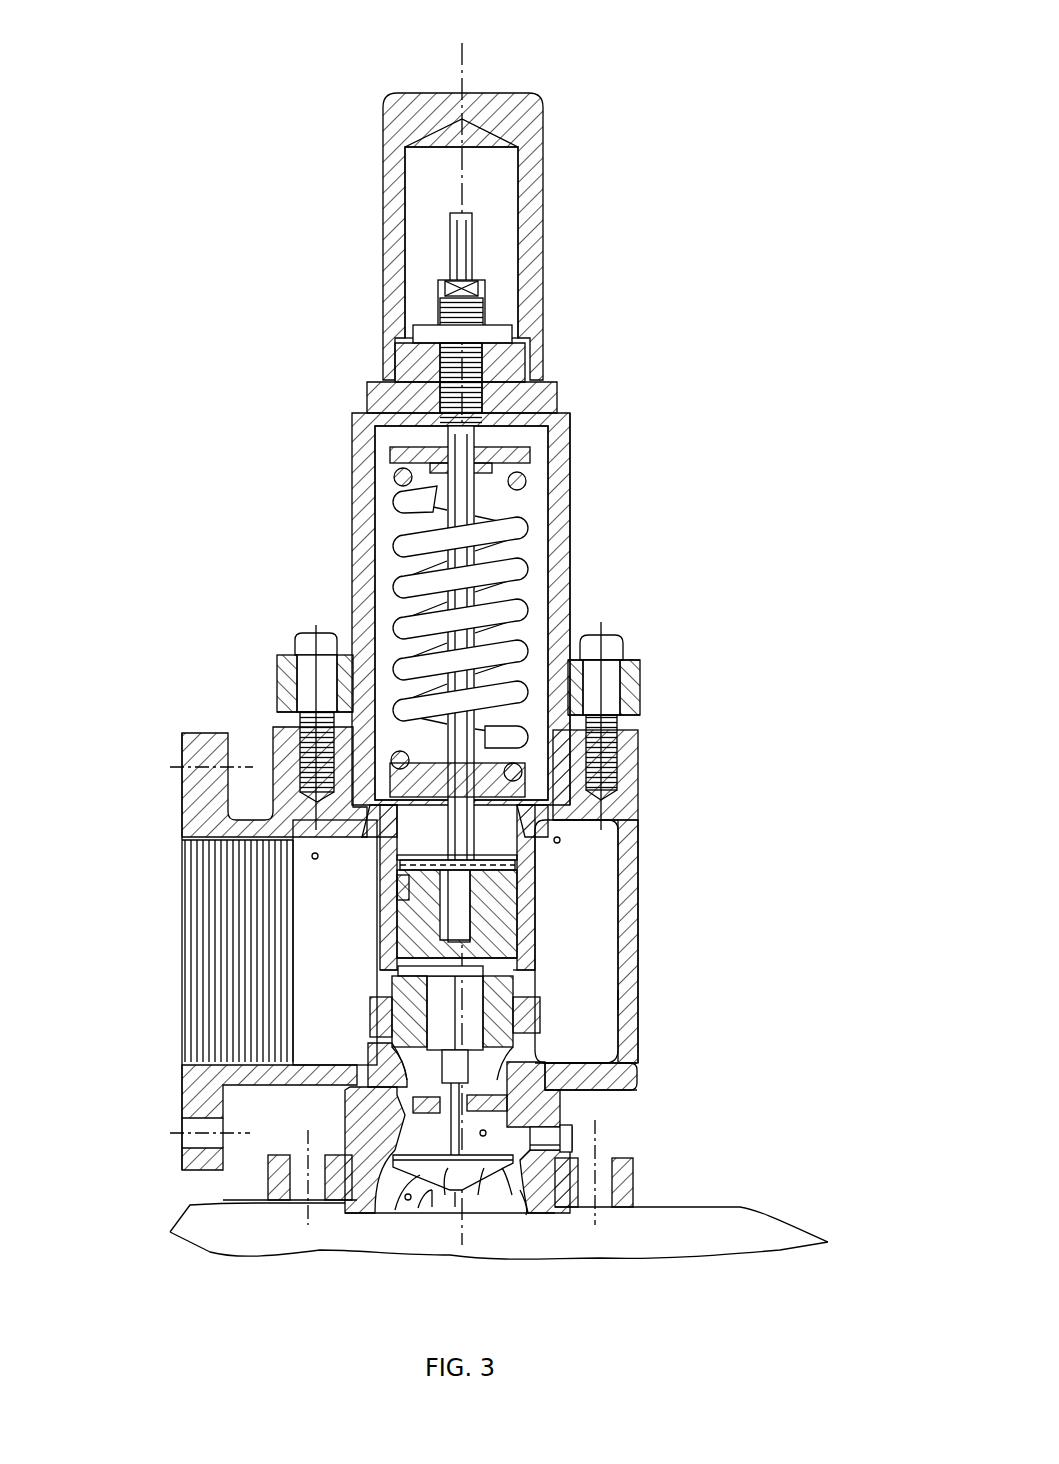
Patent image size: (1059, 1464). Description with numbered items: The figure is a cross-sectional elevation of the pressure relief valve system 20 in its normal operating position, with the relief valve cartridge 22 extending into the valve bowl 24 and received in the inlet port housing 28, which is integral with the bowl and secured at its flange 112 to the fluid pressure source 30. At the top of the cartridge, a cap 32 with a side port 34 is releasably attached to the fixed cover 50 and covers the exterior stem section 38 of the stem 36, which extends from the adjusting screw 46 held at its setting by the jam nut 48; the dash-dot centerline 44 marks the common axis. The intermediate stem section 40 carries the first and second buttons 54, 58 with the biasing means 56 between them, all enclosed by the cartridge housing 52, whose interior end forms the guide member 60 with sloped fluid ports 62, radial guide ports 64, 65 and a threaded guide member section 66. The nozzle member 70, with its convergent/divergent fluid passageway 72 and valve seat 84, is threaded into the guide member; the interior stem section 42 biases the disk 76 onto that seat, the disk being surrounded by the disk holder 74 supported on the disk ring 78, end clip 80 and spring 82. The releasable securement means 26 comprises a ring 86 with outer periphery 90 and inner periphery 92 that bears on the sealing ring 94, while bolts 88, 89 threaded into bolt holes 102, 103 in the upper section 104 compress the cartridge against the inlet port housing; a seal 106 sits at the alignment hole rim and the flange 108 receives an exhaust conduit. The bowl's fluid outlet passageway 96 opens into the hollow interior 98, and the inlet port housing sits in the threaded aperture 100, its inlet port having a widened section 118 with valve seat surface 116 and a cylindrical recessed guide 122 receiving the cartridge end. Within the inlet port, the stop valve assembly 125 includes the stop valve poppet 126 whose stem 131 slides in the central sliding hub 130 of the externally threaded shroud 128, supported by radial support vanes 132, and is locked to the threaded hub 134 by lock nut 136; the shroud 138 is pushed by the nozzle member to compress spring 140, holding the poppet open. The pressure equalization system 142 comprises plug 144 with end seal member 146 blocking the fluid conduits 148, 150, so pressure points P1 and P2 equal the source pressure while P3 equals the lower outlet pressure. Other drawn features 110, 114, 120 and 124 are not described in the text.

The pressure relief valve system 20 is at (618, 507).
The relief valve cartridge 22 is at (572, 433).
The valve bowl 24 is at (640, 905).
The releasable securement means 26 is at (648, 682).
The inlet port housing 28 is at (632, 1182).
The fluid pressure source 30 is at (712, 1232).
The cap 32 is at (520, 165).
The port 34 is at (522, 220).
The stem 36 is at (545, 700).
The exterior stem section 38 is at (470, 235).
The intermediate stem section 40 is at (518, 520).
The interior stem section 42 is at (470, 822).
The central axis 44 is at (462, 70).
The adjusting screw 46 is at (490, 350).
The jam nut 48 is at (505, 293).
The fixed cover 50 is at (545, 400).
The cartridge housing 52 is at (356, 482).
The first button 54 is at (402, 447).
The biasing means 56 is at (460, 620).
The second button 58 is at (618, 790).
The guide member 60 is at (628, 902).
The sloped fluid ports 62 is at (540, 843).
The radial guide port 64 is at (518, 982).
The radial guide port 65 is at (395, 965).
The threaded guide member section 66 is at (375, 1032).
The nozzle member 70 is at (525, 1052).
The convergent/divergent fluid passageway 72 is at (455, 1013).
The disk holder 74 is at (538, 930).
The disk 76 is at (392, 922).
The disk ring 78 is at (538, 866).
The end clip 80 is at (432, 860).
The spring 82 is at (390, 878).
The valve seat 84 is at (437, 985).
The ring 86 is at (642, 702).
The bolt 88 is at (302, 635).
The bolt 89 is at (625, 640).
The outer periphery 90 is at (280, 672).
The inner periphery 92 is at (302, 702).
The sealing ring 94 is at (643, 672).
The fluid outlet passageway 96 is at (192, 1040).
The hollow interior 98 is at (632, 1000).
The threaded aperture 100 is at (642, 1083).
The threaded bolt hole 102 is at (622, 716).
The threaded bolt hole 103 is at (290, 726).
The upper section 104 is at (640, 762).
The seal 106 is at (292, 778).
The flange 108 is at (230, 755).
The bolt hole 110 is at (185, 1140).
The flange 112 is at (270, 1170).
The flow passage 114 is at (418, 1208).
The valve seat surface 116 is at (390, 1200).
The widened section 118 is at (520, 1190).
The piston shoulder 120 is at (395, 976).
The cylindrical recessed guide 122 is at (368, 1000).
The nozzle wall 124 is at (362, 1100).
The stop valve assembly 125 is at (306, 1137).
The stop valve poppet 126 is at (460, 1247).
The externally threaded shroud 128 is at (540, 1132).
The central sliding hub 130 is at (597, 1195).
The stem 131 is at (432, 1207).
The radial extending support vanes 132 is at (446, 1125).
The threaded hub 134 is at (636, 1068).
The lock nut 136 is at (528, 1012).
The shroud 138 is at (370, 1060).
The spring 140 is at (345, 1082).
The pressure equalization system 142 is at (582, 1135).
The plug 144 is at (578, 1146).
The end seal member 146 is at (512, 1195).
The second fluid conduit 148 is at (478, 1195).
The fluid conduit 150 is at (445, 1195).
The pressure point P1 is at (395, 1210).
The pressure point P2 is at (453, 1171).
The pressure point P3 is at (300, 855).